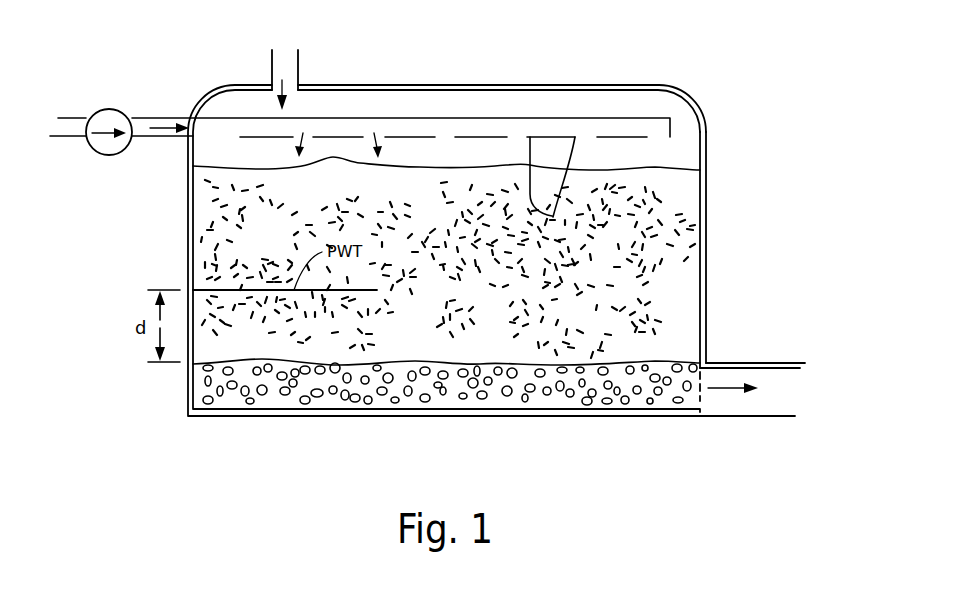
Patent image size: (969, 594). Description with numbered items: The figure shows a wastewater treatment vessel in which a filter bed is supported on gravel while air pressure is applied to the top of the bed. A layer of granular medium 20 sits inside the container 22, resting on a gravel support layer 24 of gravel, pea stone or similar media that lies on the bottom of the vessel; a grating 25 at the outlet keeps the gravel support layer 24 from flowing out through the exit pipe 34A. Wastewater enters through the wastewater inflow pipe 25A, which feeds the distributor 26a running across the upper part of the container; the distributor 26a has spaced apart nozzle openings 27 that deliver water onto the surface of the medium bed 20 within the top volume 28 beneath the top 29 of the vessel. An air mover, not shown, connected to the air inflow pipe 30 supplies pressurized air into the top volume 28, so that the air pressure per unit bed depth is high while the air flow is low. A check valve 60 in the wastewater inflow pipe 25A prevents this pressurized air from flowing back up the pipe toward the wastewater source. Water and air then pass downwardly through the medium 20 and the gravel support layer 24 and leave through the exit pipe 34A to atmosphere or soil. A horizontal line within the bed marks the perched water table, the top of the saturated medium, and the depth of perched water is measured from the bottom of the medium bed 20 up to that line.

The granular medium 20 is at (658, 243).
The container 22 is at (702, 137).
The gravel support layer 24 is at (445, 392).
The grating 25 is at (700, 397).
The wastewater inflow pipe 25A is at (168, 118).
The distributor 26a is at (367, 98).
The nozzle openings 27 is at (559, 179).
The top volume 28 is at (645, 98).
The top of vessel 29 is at (535, 85).
The air inflow pipe 30 is at (300, 64).
The exit pipe 34A is at (750, 362).
The check valve 60 is at (103, 157).